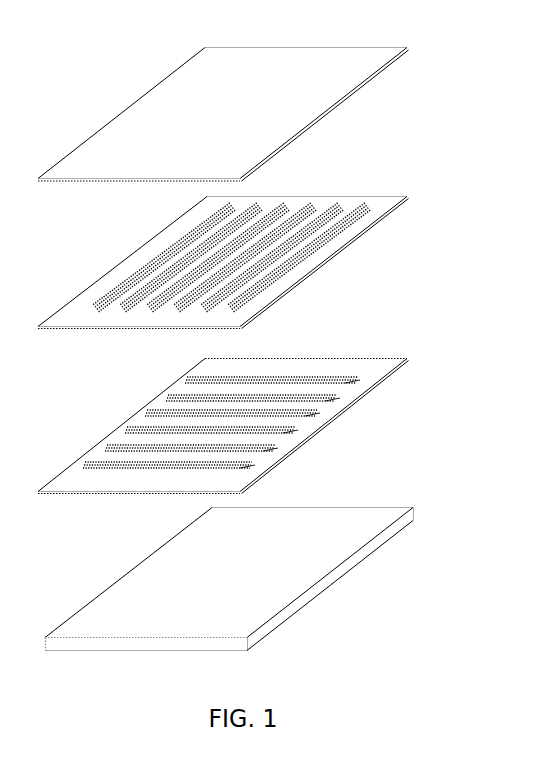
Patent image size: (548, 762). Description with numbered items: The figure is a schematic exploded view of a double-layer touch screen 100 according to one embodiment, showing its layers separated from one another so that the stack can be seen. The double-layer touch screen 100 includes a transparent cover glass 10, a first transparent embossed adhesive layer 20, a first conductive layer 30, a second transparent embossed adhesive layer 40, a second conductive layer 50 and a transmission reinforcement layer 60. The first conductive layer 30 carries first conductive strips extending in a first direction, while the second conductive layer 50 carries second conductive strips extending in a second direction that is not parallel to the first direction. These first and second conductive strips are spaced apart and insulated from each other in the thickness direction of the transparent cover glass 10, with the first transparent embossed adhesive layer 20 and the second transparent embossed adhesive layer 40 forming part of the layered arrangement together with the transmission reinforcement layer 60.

The double-layer touch screen 100 is at (173, 30).
The transparent cover glass 10 is at (288, 610).
The first transparent embossed adhesive layer 20 is at (353, 405).
The first conductive layer 30 is at (300, 417).
The second transparent embossed adhesive layer 40 is at (348, 243).
The second conductive layer 50 is at (298, 262).
The transmission reinforcement layer 60 is at (362, 86).